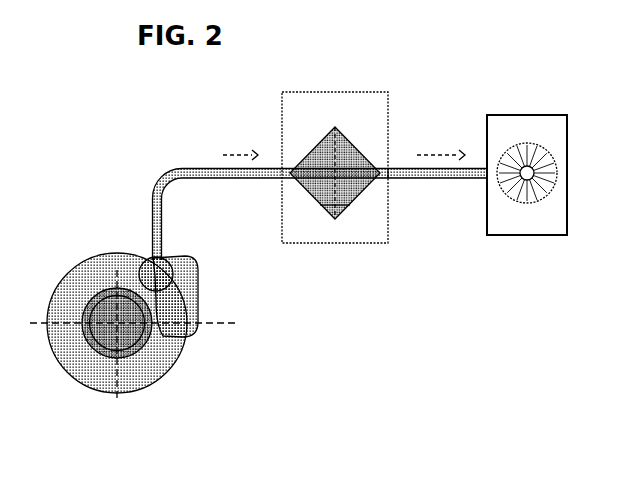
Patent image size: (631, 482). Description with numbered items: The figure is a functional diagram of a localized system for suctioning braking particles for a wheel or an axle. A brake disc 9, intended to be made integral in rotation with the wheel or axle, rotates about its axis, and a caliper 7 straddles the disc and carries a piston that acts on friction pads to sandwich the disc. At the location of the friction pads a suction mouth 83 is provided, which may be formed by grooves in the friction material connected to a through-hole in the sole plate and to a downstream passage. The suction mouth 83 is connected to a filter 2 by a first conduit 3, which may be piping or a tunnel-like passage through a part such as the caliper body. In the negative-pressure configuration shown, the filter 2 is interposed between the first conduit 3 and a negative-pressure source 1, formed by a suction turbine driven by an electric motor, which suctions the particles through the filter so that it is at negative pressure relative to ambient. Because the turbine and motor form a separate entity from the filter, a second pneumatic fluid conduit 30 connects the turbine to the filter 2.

The negative-pressure source 1 is at (535, 101).
The filter 2 is at (362, 81).
The first conduit 3 is at (167, 178).
The caliper 7 is at (217, 300).
The brake disc 9 is at (76, 244).
The second pneumatic fluid conduit 30 is at (433, 179).
The suction mouth 83 is at (178, 266).